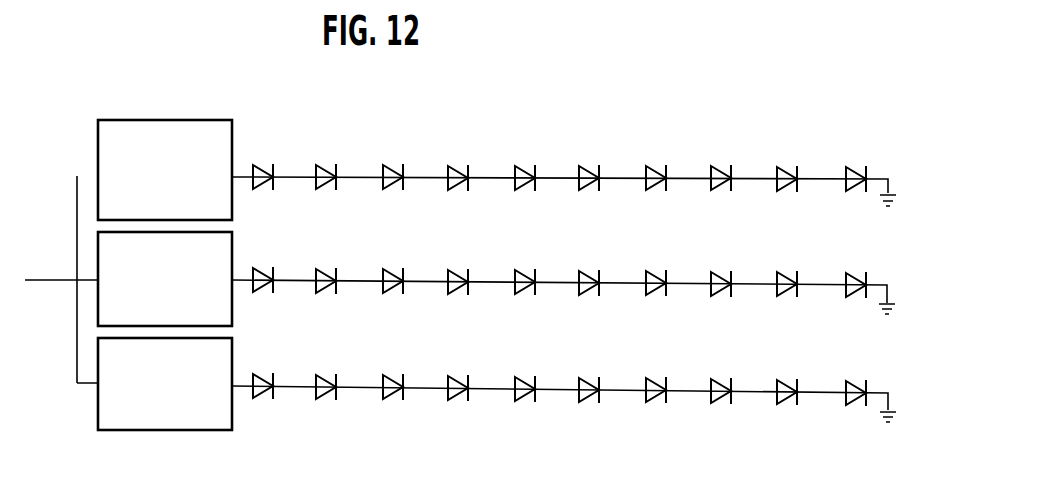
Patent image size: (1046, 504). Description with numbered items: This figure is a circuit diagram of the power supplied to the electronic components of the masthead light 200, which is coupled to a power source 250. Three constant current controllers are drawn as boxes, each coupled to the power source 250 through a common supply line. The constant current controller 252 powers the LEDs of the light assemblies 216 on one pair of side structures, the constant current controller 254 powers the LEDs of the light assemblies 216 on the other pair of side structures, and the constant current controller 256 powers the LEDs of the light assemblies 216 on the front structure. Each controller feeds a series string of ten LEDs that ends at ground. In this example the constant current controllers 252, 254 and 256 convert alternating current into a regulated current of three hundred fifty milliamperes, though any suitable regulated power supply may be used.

The power source 250 is at (20, 258).
The constant current controller 252 is at (200, 119).
The constant current controller 254 is at (148, 430).
The constant current controller 256 is at (220, 253).
The masthead light 200 is at (275, 138).
The light assemblies 216 is at (390, 163).